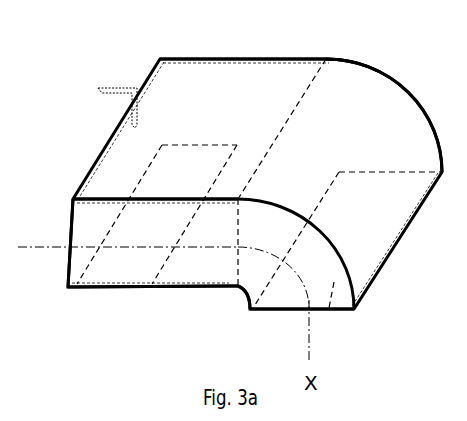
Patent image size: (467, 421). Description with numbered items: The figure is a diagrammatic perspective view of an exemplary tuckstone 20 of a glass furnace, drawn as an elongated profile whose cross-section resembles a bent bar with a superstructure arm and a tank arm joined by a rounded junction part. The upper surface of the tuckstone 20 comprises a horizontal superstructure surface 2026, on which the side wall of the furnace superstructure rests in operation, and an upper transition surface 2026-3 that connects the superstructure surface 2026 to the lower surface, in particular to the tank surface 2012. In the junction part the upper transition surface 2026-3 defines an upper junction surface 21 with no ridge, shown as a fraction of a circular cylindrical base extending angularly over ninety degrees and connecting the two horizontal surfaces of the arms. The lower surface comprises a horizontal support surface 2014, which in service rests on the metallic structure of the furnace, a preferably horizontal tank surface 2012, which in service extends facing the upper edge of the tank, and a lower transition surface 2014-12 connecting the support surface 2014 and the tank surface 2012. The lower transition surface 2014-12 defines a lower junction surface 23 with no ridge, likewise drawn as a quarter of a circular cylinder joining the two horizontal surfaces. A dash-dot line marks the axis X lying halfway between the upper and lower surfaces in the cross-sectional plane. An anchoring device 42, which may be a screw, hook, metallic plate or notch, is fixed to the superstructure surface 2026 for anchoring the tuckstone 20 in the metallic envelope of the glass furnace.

The tuckstone 20 is at (242, 210).
The upper junction surface 21 is at (392, 102).
The superstructure surface 2026 is at (206, 75).
The upper transition surface 2026-3 is at (364, 80).
The support surface 2014 is at (92, 262).
The lower transition surface 2014-12 is at (232, 290).
The lower junction surface 23 is at (241, 309).
The tank surface 2012 is at (329, 312).
The anchoring device 42 is at (121, 88).